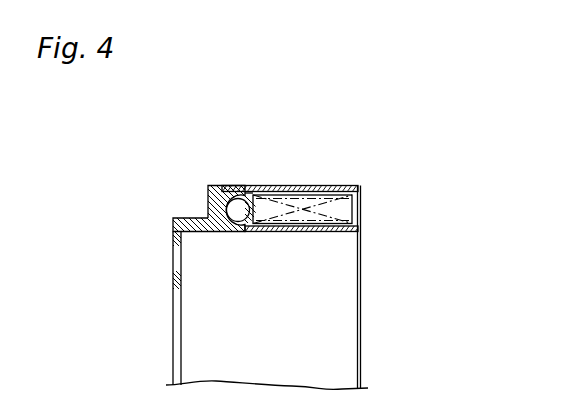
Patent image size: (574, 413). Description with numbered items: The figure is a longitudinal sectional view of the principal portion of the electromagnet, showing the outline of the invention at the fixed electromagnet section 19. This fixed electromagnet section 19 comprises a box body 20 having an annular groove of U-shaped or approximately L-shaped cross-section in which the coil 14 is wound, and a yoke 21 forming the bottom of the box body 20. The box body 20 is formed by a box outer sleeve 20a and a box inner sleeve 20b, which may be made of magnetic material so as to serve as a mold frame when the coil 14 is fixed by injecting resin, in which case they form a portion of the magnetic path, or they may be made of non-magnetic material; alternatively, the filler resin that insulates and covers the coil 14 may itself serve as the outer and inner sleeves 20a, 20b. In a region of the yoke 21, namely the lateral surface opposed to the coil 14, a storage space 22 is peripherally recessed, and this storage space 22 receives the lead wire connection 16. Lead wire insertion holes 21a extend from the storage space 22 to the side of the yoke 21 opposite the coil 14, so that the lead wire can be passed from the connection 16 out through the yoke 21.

The fixed electromagnet section 19 is at (250, 89).
The yoke 21 is at (216, 186).
The box body 20 is at (243, 186).
The box outer sleeve 20a is at (336, 187).
The box inner sleeve 20b is at (320, 232).
The storage space 22 is at (272, 186).
The coil 14 is at (352, 213).
The lead wire connection 16 is at (236, 214).
The lead wire insertion holes 21a is at (212, 213).